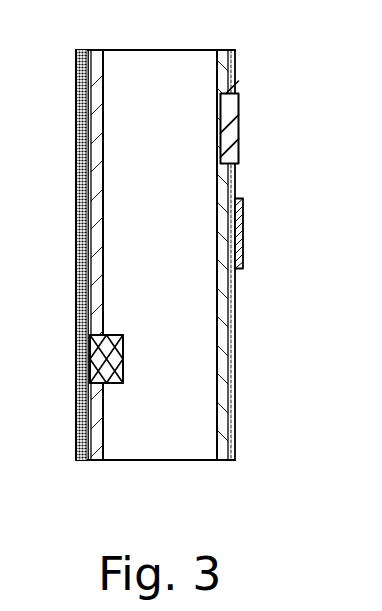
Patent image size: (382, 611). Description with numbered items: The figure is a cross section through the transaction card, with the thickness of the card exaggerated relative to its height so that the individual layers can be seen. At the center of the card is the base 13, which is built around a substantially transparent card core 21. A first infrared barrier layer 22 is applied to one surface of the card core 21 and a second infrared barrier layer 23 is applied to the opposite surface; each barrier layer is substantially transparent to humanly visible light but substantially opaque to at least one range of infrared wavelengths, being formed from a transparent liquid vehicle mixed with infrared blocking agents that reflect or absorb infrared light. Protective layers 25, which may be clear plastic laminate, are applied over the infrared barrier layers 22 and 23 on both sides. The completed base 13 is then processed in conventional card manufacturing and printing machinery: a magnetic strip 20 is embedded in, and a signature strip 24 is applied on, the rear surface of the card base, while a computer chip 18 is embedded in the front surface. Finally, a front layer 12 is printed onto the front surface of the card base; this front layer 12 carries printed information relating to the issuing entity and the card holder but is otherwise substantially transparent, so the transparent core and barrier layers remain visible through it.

The front layer 12 is at (80, 459).
The base 13 is at (175, 50).
The computer chip 18 is at (90, 381).
The magnetic strip 20 is at (238, 113).
The card core 21 is at (157, 458).
The first infrared barrier layer 22 is at (101, 461).
The second infrared barrier layer 23 is at (219, 461).
The signature strip 24 is at (243, 230).
The protective layers 25 is at (90, 50).